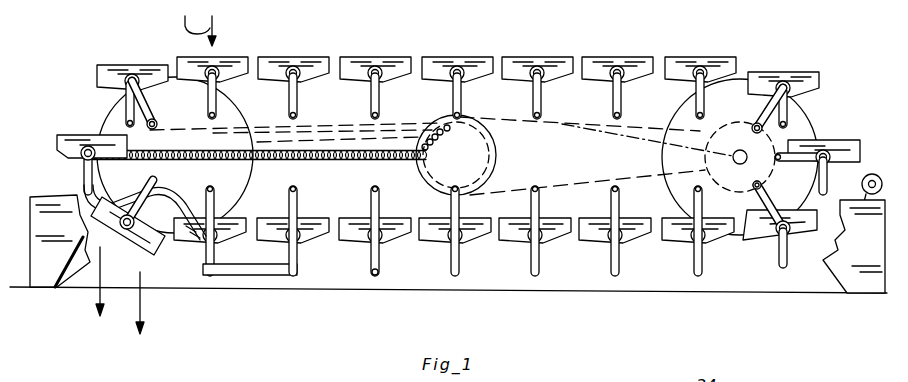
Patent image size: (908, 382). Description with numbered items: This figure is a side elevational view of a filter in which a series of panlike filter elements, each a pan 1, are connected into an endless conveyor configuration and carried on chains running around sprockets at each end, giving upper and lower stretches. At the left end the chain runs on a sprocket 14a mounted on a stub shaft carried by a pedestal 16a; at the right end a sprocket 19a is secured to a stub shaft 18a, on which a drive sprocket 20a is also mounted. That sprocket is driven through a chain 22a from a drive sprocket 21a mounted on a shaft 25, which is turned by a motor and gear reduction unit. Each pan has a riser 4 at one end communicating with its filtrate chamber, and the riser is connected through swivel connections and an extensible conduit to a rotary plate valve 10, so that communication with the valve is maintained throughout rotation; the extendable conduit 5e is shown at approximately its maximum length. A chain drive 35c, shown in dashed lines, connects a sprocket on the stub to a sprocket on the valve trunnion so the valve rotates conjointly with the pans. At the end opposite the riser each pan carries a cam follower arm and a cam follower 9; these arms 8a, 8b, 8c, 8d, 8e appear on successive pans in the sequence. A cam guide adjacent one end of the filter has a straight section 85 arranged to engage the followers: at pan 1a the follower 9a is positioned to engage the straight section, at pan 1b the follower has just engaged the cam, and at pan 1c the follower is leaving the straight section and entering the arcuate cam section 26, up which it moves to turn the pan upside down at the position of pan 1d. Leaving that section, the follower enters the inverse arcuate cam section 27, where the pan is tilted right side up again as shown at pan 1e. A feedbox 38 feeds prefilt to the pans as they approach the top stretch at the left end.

The pan 1 is at (313, 60).
The pan 1a is at (393, 222).
The pan 1b is at (313, 222).
The pan 1c is at (238, 221).
The pan 1d is at (143, 240).
The pan 1e is at (66, 138).
The riser 4 is at (370, 92).
The extendable conduit 5e is at (168, 162).
The cam follower arm 8a is at (381, 257).
The cam follower arm 8b is at (301, 258).
The cam follower arm 8c is at (213, 254).
The cam follower arm 8d is at (172, 238).
The cam follower arm 8e is at (84, 169).
The cam follower 9 is at (379, 108).
The cam follower 9a is at (367, 258).
The rotary plate valve 10 is at (503, 150).
The sprocket 14a is at (115, 110).
The pedestal 16a is at (73, 267).
The stub shaft 18a is at (680, 156).
The sprocket 19a is at (677, 116).
The drive sprocket 20a is at (723, 128).
The drive sprocket 21a is at (872, 253).
The chain 22a is at (811, 122).
The shaft 25 is at (874, 176).
The arcuate cam section 26 is at (203, 241).
The arcuate cam section 27 is at (103, 194).
The chain drive 35c is at (652, 158).
The feedbox 38 is at (216, 26).
The straight section 85 is at (284, 277).